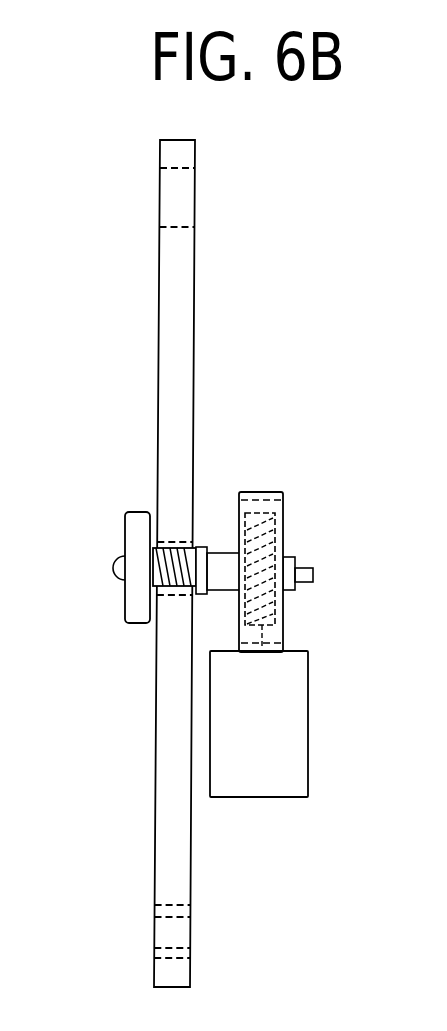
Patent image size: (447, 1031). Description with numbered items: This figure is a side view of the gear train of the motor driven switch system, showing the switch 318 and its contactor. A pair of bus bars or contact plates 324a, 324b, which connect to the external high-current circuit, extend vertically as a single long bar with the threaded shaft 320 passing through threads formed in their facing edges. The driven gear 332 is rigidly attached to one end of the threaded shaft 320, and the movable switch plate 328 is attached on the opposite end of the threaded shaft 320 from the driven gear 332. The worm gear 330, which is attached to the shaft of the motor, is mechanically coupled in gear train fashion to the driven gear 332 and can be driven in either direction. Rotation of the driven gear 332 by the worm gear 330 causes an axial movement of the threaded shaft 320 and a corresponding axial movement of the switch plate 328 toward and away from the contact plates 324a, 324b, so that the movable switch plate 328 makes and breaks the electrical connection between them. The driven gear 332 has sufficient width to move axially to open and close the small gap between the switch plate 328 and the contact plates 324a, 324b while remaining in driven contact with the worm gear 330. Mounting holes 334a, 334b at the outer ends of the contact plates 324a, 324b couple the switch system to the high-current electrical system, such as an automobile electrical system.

The switch 318 is at (318, 146).
The threaded shaft 320 is at (197, 547).
The contact plate 324a is at (194, 400).
The contact plate 324b is at (190, 850).
The movable switch plate 328 is at (125, 593).
The worm gear 330 is at (273, 615).
The driven gear 332 is at (330, 490).
The mounting hole 334a is at (182, 205).
The mounting hole 334b is at (190, 935).